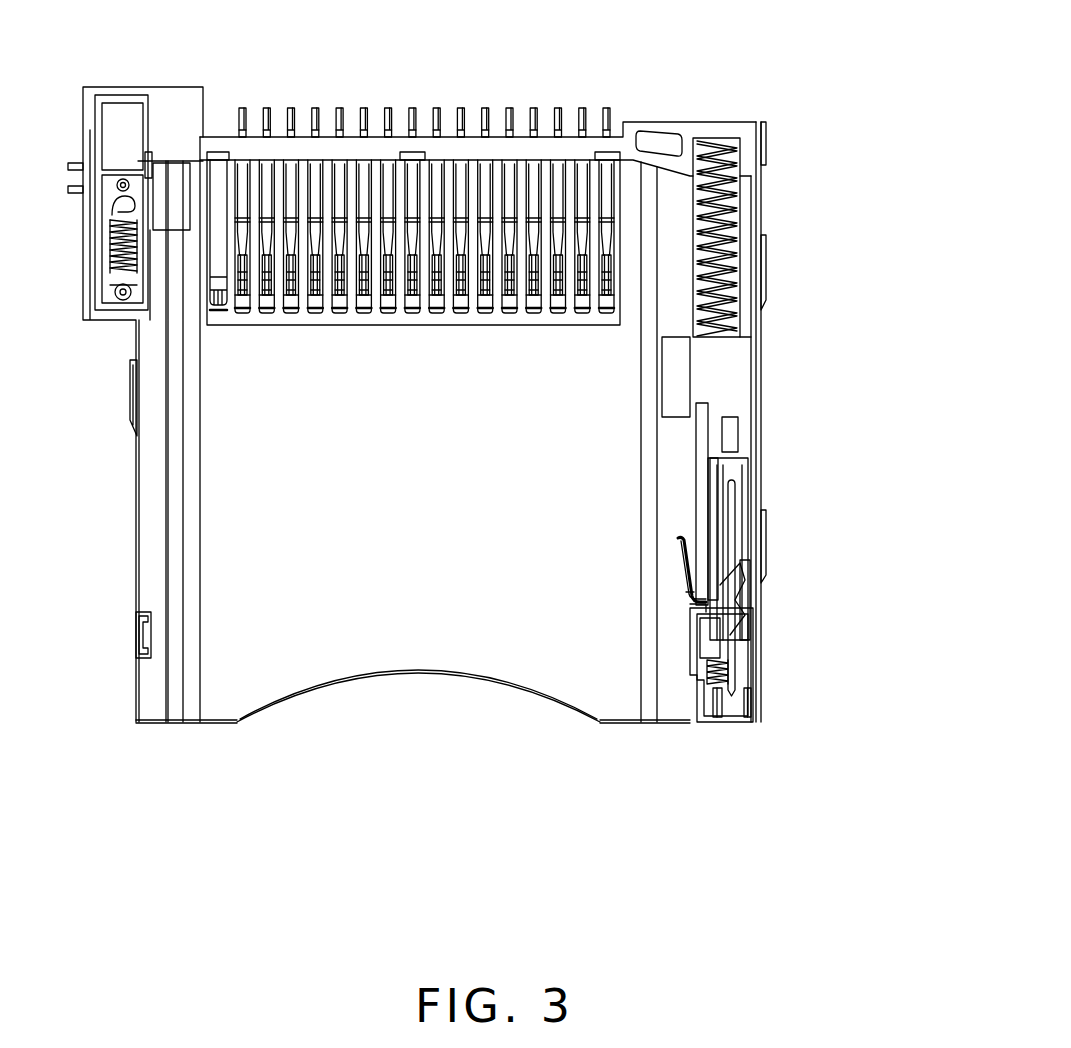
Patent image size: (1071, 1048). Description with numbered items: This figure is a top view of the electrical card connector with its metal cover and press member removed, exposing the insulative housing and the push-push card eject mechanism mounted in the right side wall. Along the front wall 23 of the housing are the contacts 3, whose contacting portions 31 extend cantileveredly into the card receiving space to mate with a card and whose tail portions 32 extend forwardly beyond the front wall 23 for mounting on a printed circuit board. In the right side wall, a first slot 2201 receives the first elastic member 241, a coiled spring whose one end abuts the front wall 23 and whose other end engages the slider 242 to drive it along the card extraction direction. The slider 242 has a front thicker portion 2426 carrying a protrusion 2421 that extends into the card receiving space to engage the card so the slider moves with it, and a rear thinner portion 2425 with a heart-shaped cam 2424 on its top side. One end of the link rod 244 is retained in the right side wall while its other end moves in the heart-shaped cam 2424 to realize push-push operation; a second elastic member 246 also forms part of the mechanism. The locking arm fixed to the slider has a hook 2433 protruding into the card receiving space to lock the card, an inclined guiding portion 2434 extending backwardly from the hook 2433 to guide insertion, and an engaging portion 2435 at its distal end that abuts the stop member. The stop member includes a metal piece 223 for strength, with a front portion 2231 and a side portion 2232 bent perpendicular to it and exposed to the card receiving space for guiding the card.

The contacts 3 is at (558, 188).
The front wall 23 is at (479, 152).
The contacting portions 31 is at (242, 273).
The tail portions 32 is at (257, 100).
The first elastic member 241 is at (723, 242).
The first slot 2201 is at (742, 273).
The protrusion 2421 is at (677, 377).
The front thicker portion 2426 is at (742, 370).
The slider 242 is at (737, 390).
The link rod 244 is at (730, 507).
The rear thinner portion 2425 is at (703, 557).
The front portion 2231 is at (720, 583).
The heart-shaped cam 2424 is at (745, 607).
The side portion 2232 is at (732, 652).
The second elastic member 246 is at (748, 686).
The metal piece 223 is at (705, 628).
The hook 2433 is at (680, 540).
The inclined guiding portion 2434 is at (690, 593).
The engaging portion 2435 is at (690, 605).